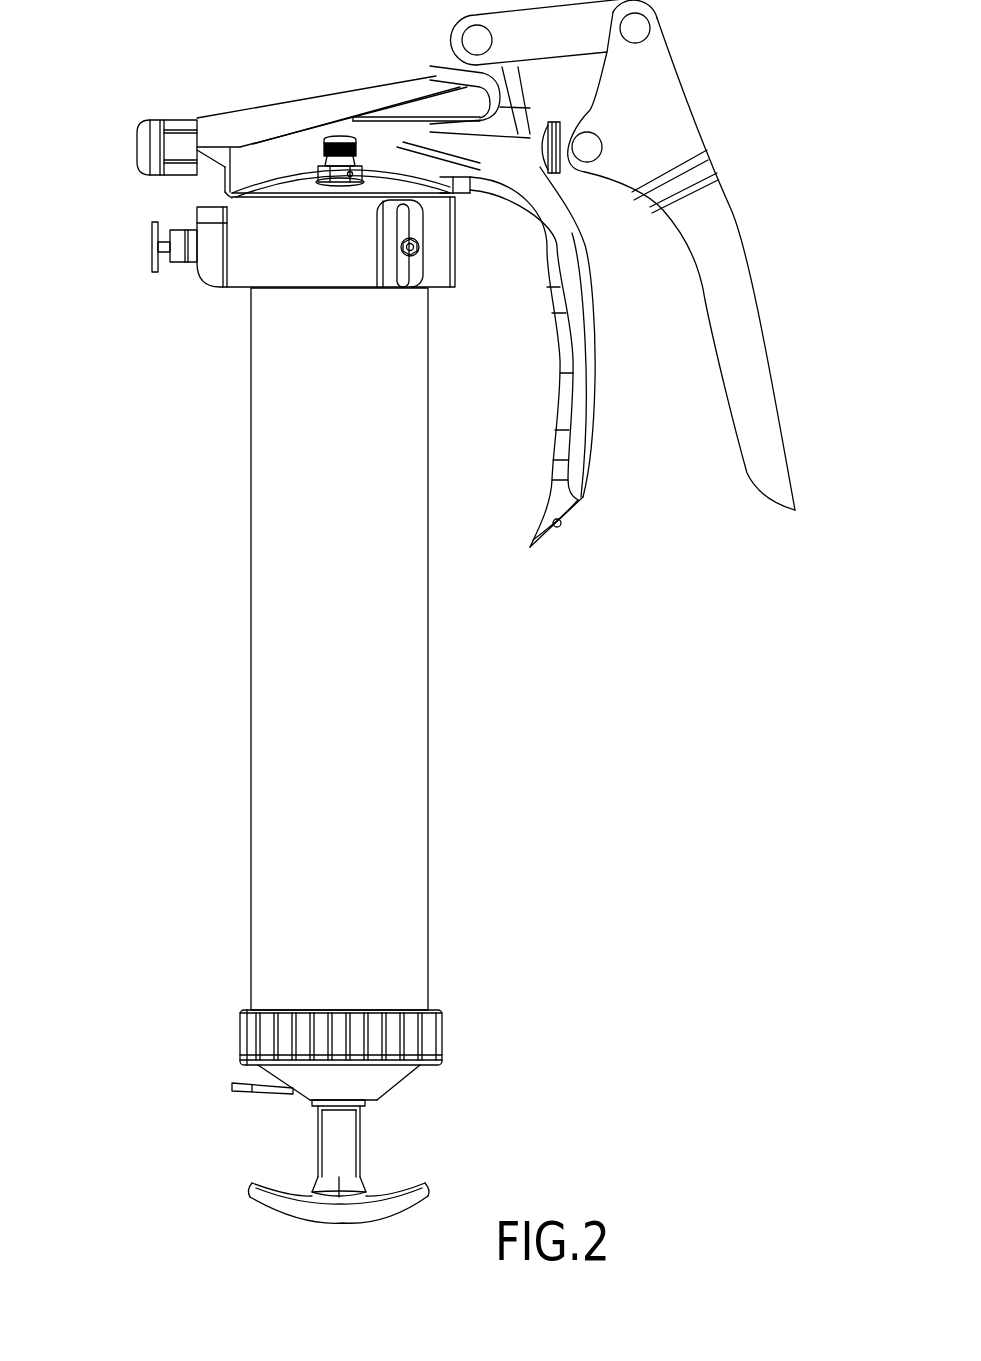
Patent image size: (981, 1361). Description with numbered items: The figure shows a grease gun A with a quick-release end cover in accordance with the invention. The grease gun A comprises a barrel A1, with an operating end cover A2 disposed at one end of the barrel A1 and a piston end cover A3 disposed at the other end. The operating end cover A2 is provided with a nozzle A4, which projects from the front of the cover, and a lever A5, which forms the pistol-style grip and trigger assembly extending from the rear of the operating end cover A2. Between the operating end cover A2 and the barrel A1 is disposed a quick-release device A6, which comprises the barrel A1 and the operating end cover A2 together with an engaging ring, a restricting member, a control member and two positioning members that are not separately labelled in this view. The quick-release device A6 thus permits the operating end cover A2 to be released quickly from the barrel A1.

The grease gun A is at (198, 100).
The barrel A1 is at (250, 518).
The operating end cover A2 is at (240, 283).
The piston end cover A3 is at (238, 1022).
The nozzle A4 is at (135, 143).
The lever A5 is at (813, 504).
The quick-release device A6 is at (150, 240).